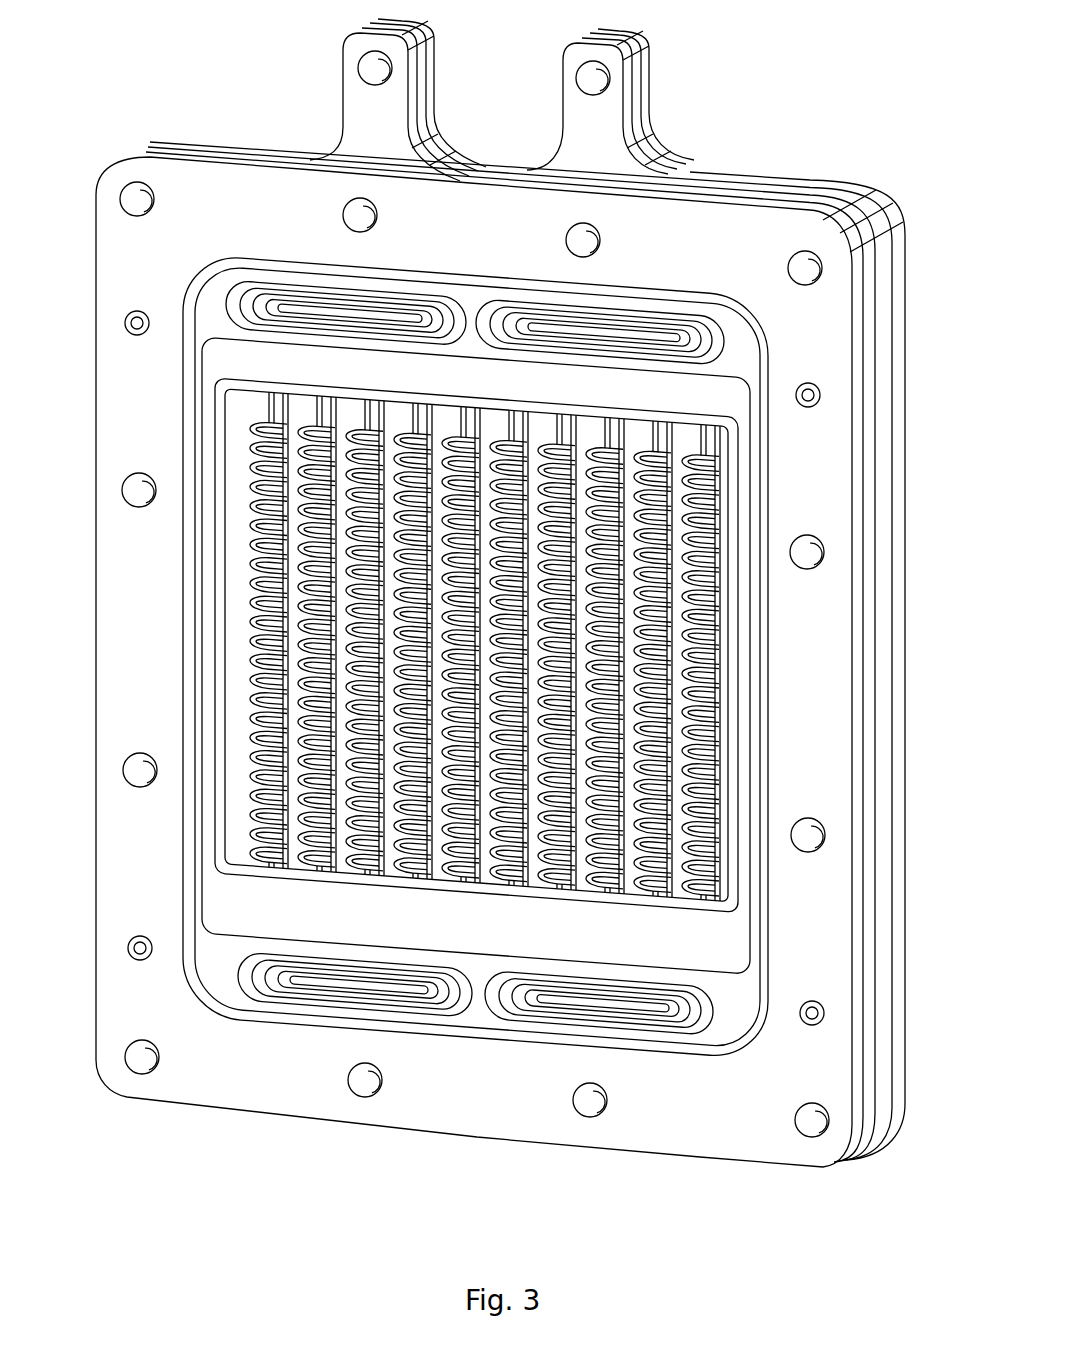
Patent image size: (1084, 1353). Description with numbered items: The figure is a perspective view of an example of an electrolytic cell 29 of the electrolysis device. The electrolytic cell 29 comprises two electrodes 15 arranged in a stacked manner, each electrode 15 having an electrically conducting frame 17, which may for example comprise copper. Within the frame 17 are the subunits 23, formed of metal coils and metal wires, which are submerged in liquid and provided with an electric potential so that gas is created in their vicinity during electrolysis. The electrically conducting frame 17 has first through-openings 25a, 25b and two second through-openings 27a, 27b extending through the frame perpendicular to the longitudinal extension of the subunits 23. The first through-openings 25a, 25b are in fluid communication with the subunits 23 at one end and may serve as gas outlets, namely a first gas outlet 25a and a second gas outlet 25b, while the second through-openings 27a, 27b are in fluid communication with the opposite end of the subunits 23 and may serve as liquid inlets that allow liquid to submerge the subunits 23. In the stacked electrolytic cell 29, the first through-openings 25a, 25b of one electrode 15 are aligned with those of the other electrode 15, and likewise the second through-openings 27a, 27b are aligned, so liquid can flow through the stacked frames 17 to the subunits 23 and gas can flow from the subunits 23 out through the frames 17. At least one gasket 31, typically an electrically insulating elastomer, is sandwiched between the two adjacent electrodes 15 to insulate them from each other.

The electrode 15 is at (87, 147).
The electrically conducting frame 17 is at (217, 197).
The subunits 23 is at (244, 857).
The first gas outlet 25a is at (300, 305).
The second gas outlet 25b is at (622, 337).
The second through-opening 27a is at (325, 976).
The second through-opening 27b is at (563, 994).
The electrolytic cell 29 is at (843, 11).
The gasket 31 is at (878, 366).